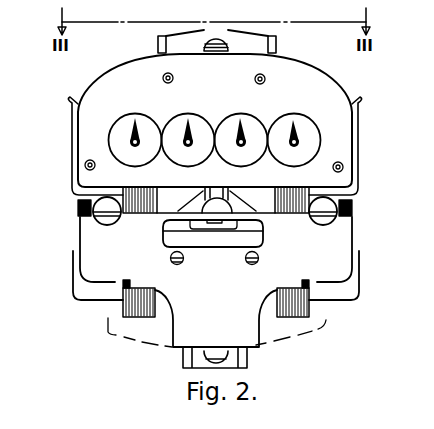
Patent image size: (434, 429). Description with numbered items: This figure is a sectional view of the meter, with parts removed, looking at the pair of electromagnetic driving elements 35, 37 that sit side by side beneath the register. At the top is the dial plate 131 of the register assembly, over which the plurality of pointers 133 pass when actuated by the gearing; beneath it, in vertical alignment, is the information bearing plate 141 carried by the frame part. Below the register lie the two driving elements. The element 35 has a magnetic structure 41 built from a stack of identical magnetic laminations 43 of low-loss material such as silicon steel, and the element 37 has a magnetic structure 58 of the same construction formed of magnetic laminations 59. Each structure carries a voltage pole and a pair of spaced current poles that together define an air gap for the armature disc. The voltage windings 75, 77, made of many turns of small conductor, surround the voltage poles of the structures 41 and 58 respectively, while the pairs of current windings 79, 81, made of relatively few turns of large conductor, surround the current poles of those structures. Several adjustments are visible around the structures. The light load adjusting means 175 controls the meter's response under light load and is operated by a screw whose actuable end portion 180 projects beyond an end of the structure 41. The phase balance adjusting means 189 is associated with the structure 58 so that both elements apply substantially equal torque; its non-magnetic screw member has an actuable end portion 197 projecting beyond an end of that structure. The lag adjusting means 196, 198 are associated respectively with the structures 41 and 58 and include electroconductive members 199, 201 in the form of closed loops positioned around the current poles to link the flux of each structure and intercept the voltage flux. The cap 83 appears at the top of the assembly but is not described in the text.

The top cap 83 is at (277, 41).
The dial plate 131 is at (334, 78).
The voltage winding 75 is at (70, 101).
The voltage winding 77 is at (359, 103).
The pointers 133 is at (292, 122).
The electroconductive member 199 is at (73, 236).
The actuable end portion 180 is at (119, 218).
The light load adjusting means 175 is at (117, 249).
The lag adjusting means 196 is at (73, 251).
The current windings 79 is at (73, 284).
The magnetic structure 41 is at (122, 304).
The magnetic laminations 43 is at (145, 314).
The electromagnetic driving element 35 is at (133, 359).
The actuable end portion 197 is at (336, 204).
The information bearing plate 141 is at (353, 226).
The electroconductive member 201 is at (355, 239).
The lag adjusting means 198 is at (359, 251).
The phase balance adjusting means 189 is at (313, 244).
The current windings 81 is at (359, 284).
The magnetic structure 58 is at (309, 310).
The magnetic laminations 59 is at (286, 314).
The electromagnetic driving element 37 is at (311, 360).